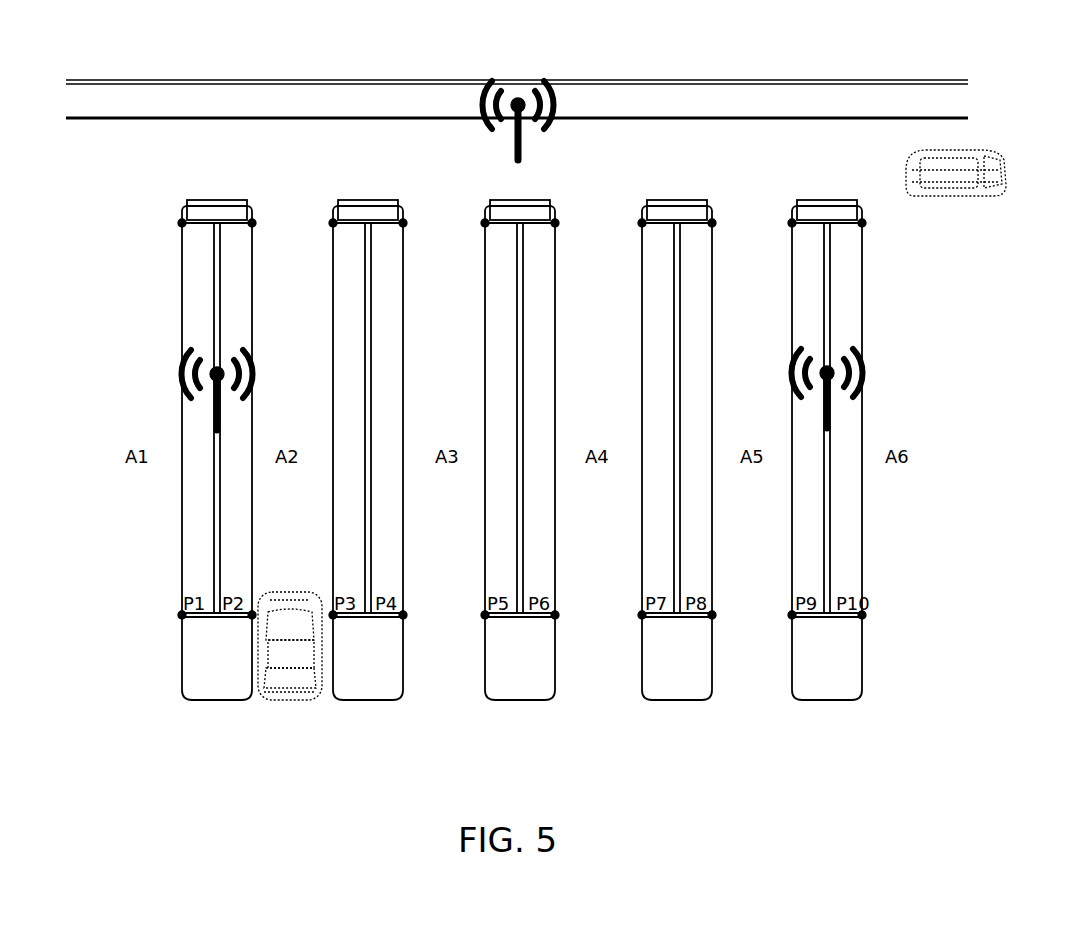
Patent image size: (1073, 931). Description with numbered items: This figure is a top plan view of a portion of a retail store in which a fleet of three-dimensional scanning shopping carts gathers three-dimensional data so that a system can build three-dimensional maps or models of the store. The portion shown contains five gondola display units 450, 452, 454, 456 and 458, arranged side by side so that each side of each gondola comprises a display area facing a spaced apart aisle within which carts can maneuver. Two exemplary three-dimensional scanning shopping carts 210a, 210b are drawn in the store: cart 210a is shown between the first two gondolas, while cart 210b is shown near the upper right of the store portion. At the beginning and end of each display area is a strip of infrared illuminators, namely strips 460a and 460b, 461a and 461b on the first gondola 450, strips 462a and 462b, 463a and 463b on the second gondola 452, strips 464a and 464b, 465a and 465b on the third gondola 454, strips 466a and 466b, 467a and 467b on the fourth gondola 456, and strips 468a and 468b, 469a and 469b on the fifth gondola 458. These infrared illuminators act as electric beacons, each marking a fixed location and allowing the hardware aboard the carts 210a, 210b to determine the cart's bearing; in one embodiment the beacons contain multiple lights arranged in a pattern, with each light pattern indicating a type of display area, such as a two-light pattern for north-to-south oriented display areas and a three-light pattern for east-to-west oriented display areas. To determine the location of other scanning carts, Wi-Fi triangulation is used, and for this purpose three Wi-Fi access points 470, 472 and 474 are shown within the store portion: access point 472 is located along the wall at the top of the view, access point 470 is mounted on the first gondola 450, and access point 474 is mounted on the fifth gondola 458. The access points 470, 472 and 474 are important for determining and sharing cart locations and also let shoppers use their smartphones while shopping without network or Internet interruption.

The gondola display unit 450 is at (215, 703).
The gondola display unit 452 is at (371, 703).
The gondola display unit 454 is at (519, 703).
The gondola display unit 456 is at (678, 703).
The gondola display unit 458 is at (826, 703).
The strip of infrared illuminators 460a is at (182, 615).
The strip of infrared illuminators 460b is at (182, 223).
The strip of infrared illuminators 461a is at (268, 590).
The strip of infrared illuminators 461b is at (252, 223).
The strip of infrared illuminators 462a is at (333, 615).
The strip of infrared illuminators 462b is at (333, 223).
The strip of infrared illuminators 463a is at (403, 615).
The strip of infrared illuminators 463b is at (403, 223).
The strip of infrared illuminators 464a is at (485, 615).
The strip of infrared illuminators 464b is at (485, 223).
The strip of infrared illuminators 465a is at (555, 615).
The strip of infrared illuminators 465b is at (555, 223).
The strip of infrared illuminators 466a is at (642, 615).
The strip of infrared illuminators 466b is at (642, 223).
The strip of infrared illuminators 467a is at (712, 615).
The strip of infrared illuminators 467b is at (712, 223).
The strip of infrared illuminators 468a is at (792, 615).
The strip of infrared illuminators 468b is at (792, 223).
The strip of infrared illuminators 469a is at (862, 615).
The strip of infrared illuminators 469b is at (862, 223).
The Wi-Fi access point 470 is at (160, 378).
The Wi-Fi access point 472 is at (466, 134).
The Wi-Fi access point 474 is at (880, 386).
The 3D scanning shopping cart 210a is at (288, 712).
The 3D scanning shopping cart 210b is at (952, 205).